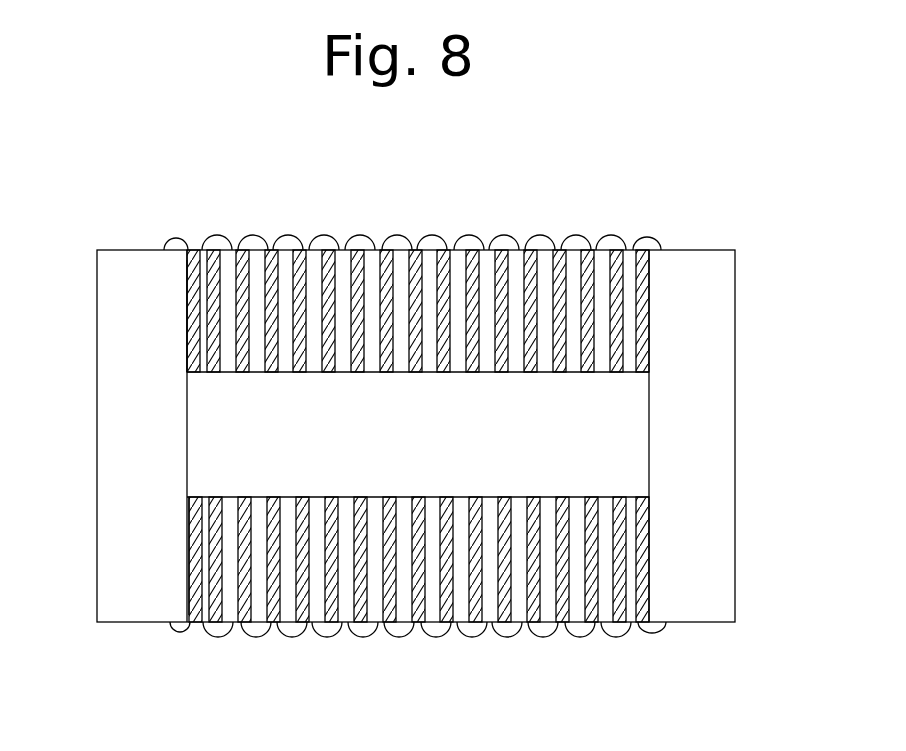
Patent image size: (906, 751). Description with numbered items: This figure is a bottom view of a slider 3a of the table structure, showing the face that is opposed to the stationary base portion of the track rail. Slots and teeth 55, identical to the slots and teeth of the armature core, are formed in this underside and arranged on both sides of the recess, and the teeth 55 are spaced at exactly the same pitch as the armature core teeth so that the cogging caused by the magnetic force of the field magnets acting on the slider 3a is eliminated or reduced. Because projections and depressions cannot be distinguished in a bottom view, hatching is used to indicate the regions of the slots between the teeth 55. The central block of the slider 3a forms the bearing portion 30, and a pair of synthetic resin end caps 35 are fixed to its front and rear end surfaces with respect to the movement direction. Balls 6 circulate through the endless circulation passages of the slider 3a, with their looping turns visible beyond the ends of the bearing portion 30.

The slider 3a is at (716, 232).
The balls 6 is at (360, 243).
The bearing portion 30 is at (187, 292).
The end cap 35 is at (112, 400).
The teeth 55 is at (541, 248).